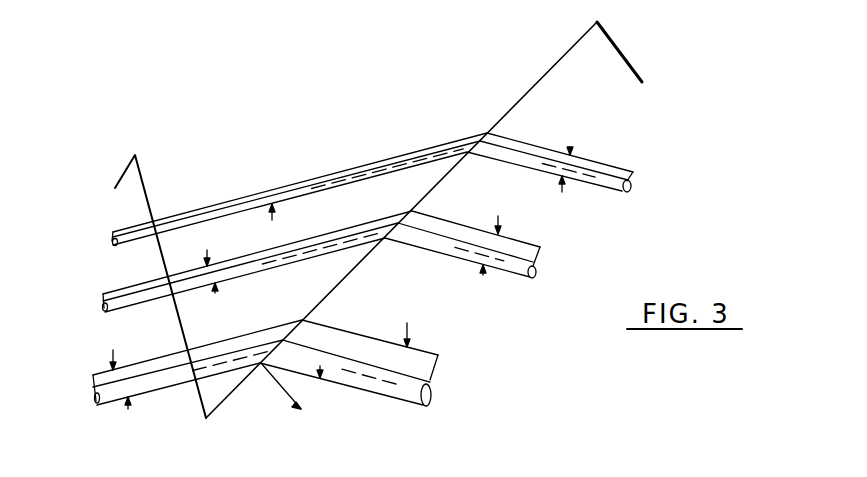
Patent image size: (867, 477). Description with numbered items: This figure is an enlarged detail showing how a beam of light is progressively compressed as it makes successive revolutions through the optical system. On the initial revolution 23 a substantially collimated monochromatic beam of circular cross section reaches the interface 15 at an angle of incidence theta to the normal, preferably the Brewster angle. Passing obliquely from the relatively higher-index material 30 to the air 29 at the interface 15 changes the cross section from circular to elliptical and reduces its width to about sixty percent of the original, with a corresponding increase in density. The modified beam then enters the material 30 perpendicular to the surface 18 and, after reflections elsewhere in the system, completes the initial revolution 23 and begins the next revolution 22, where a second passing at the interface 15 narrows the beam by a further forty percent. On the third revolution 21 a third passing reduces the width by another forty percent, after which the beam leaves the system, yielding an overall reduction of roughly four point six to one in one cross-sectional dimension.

The interface 15 is at (579, 41).
The surface 18 is at (141, 178).
The third revolution 21 is at (632, 183).
The revolution 22 is at (534, 268).
The initial revolution 23 is at (438, 376).
The air 29 is at (515, 84).
The material 30 is at (612, 84).